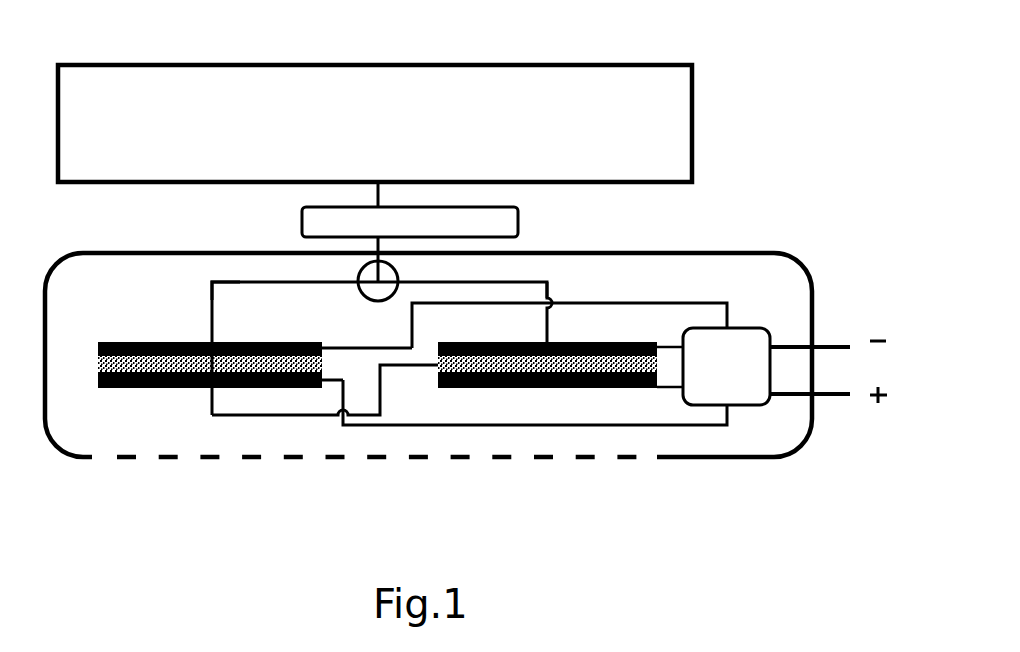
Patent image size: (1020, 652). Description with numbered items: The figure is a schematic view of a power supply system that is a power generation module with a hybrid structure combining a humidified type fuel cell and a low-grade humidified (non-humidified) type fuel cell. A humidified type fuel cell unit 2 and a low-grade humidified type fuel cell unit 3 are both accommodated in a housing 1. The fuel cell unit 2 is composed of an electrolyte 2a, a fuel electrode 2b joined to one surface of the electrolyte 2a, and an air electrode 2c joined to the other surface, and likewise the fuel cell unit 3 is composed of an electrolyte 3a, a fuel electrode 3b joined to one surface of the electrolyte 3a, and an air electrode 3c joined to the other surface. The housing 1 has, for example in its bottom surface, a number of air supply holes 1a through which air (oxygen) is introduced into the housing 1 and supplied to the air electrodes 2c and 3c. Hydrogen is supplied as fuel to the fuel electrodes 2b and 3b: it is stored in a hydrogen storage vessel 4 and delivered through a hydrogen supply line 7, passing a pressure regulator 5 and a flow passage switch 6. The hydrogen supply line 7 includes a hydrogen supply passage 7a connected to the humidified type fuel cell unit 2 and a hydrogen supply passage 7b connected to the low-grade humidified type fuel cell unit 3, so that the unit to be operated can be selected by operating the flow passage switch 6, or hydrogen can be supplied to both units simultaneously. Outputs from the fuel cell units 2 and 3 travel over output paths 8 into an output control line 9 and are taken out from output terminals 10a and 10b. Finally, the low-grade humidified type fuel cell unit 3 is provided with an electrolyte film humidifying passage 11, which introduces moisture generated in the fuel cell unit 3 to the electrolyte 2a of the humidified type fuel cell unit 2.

The housing 1 is at (718, 250).
The air supply holes 1a is at (380, 459).
The humidified type fuel cell unit 2 is at (542, 416).
The electrolyte 2a is at (437, 366).
The fuel electrode 2b is at (438, 350).
The air electrode 2c is at (437, 388).
The low-grade humidified type fuel cell unit 3 is at (231, 420).
The electrolyte 3a is at (98, 365).
The fuel electrode 3b is at (98, 346).
The air electrode 3c is at (98, 389).
The hydrogen storage vessel 4 is at (548, 63).
The pressure regulator 5 is at (300, 223).
The flow passage switch 6 is at (358, 279).
The hydrogen supply line 7 is at (523, 278).
The hydrogen supply passage 7a is at (548, 284).
The hydrogen supply passage 7b is at (225, 282).
The output paths 8 is at (693, 302).
The output control line 9 is at (743, 405).
The output terminal 10a is at (826, 398).
The output terminal 10b is at (836, 341).
The electrolyte film humidifying passage 11 is at (267, 417).